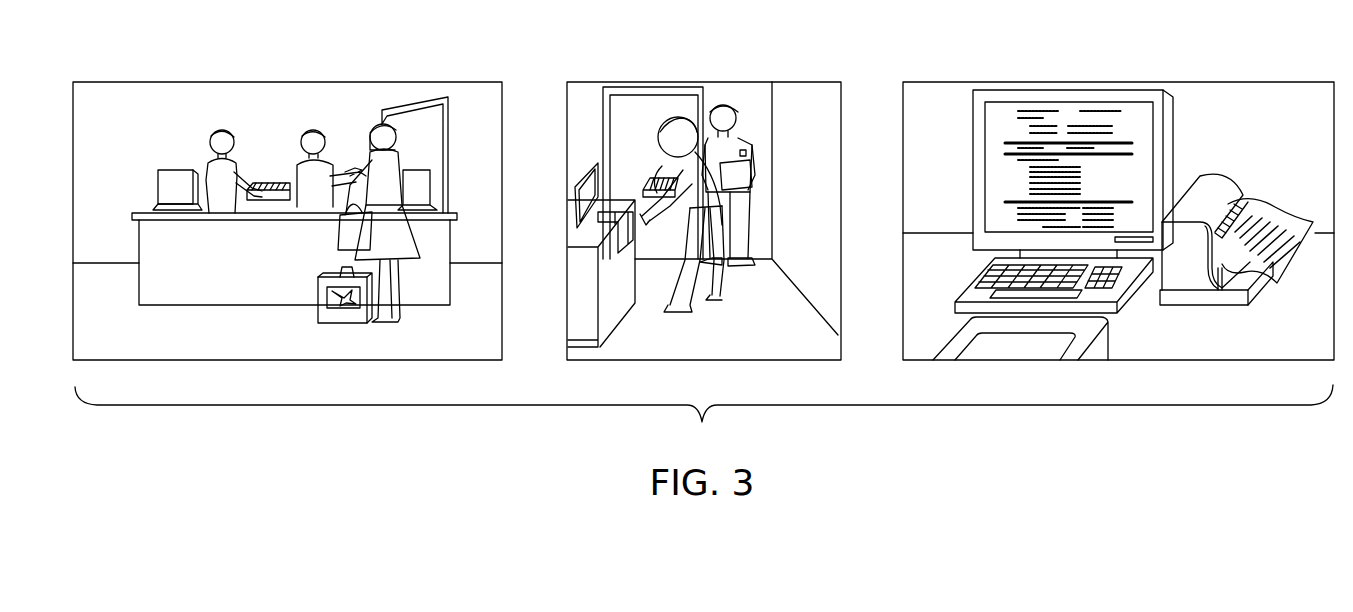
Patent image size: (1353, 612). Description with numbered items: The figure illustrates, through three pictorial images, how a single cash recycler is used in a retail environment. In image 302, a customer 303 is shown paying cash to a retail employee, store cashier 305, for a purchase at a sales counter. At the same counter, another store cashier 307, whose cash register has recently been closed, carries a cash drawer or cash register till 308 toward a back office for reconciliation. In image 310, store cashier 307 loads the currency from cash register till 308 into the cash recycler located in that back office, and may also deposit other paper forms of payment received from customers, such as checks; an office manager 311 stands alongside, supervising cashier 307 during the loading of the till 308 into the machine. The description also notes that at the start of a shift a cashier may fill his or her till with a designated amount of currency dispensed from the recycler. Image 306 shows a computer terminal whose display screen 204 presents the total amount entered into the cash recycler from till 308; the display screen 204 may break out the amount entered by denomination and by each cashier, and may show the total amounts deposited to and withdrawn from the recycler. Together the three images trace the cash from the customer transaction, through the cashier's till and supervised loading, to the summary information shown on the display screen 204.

The image 302 is at (109, 102).
The customer 303 is at (400, 243).
The store cashier 305 is at (307, 132).
The store cashier 307 is at (215, 130).
The cash register till 308 is at (278, 197).
The image 310 is at (795, 100).
The office manager 311 is at (740, 193).
The image 306 is at (1263, 93).
The display screen / user interface 204 is at (1008, 118).